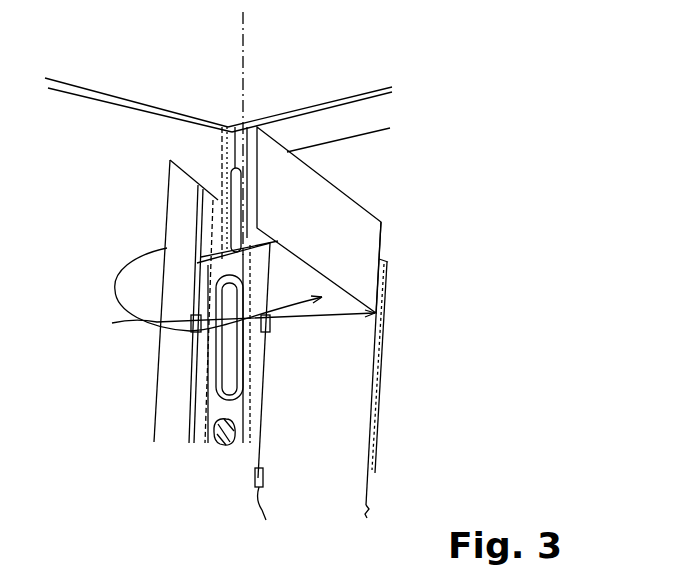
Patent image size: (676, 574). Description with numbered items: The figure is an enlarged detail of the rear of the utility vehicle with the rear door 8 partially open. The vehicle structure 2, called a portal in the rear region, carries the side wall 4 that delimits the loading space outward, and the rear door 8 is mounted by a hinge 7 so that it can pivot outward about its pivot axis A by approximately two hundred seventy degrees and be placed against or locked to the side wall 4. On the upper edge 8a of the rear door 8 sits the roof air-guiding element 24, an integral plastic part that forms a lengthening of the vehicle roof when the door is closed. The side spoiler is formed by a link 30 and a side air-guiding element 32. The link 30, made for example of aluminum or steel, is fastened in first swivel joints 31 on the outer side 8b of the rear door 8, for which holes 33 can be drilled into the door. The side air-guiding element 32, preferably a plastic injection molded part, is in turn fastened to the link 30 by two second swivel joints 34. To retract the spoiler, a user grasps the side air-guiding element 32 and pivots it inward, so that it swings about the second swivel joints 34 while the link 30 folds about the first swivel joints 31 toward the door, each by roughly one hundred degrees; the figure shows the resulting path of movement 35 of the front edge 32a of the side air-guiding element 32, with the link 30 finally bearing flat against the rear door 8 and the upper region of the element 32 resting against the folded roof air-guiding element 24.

The pivot axis A is at (243, 27).
The vehicle structure 2 is at (352, 117).
The side wall 4 is at (160, 135).
The hinge 7 is at (220, 182).
The rear door 8 is at (366, 512).
The upper edge of the rear door 8a is at (383, 258).
The outer side of the rear door 8b is at (336, 425).
The roof air-guiding element 24 is at (370, 233).
The link 30 is at (195, 425).
The first swivel joints 31 is at (270, 332).
The side air-guiding element 32 is at (168, 382).
The front edge of the side air-guiding element 32a is at (167, 195).
The holes 33 is at (262, 522).
The second swivel joints 34 is at (225, 325).
The path of movement 35 is at (117, 277).